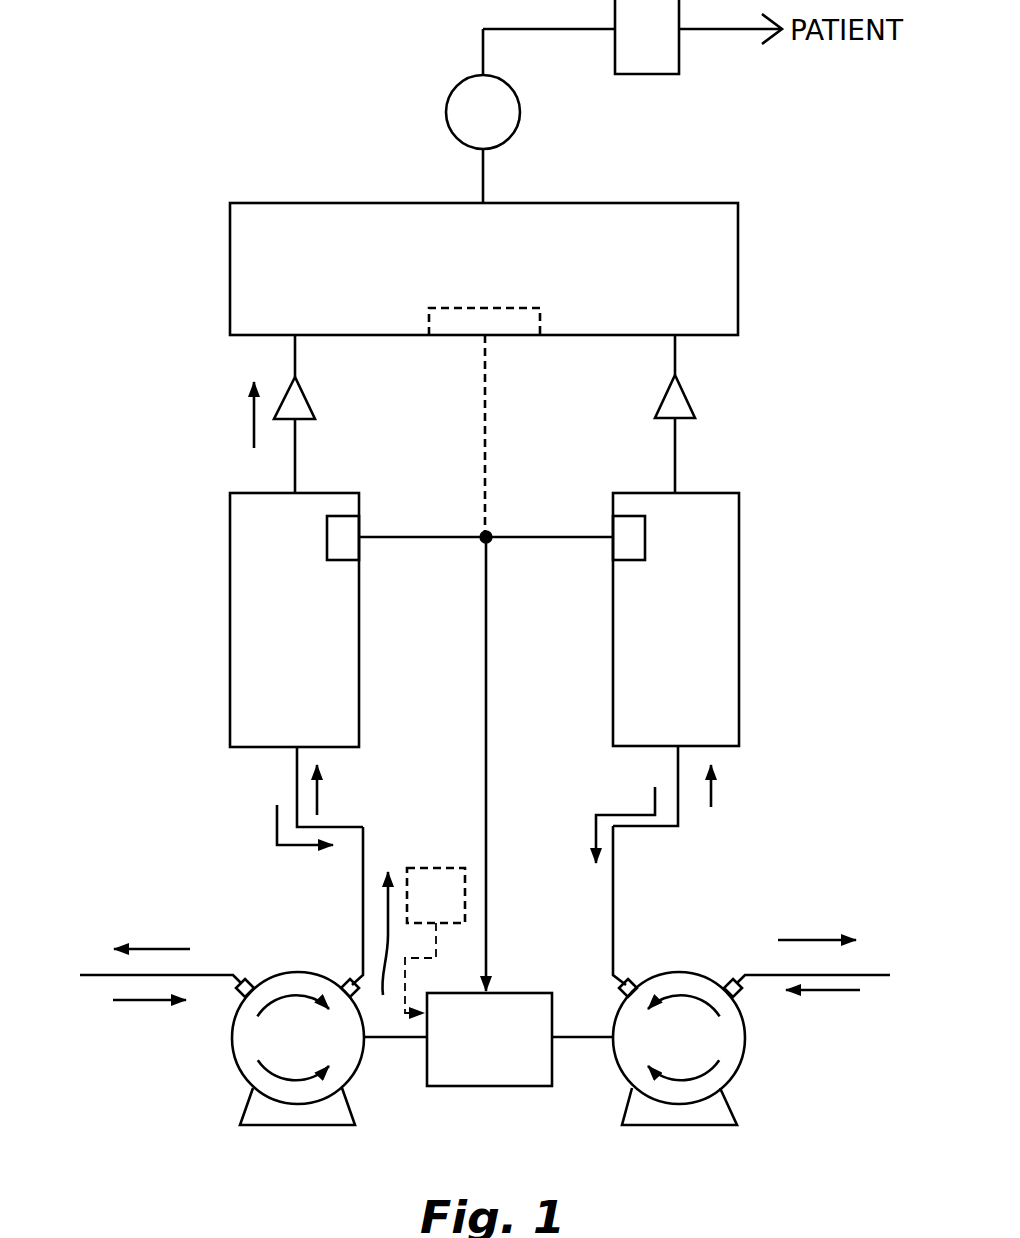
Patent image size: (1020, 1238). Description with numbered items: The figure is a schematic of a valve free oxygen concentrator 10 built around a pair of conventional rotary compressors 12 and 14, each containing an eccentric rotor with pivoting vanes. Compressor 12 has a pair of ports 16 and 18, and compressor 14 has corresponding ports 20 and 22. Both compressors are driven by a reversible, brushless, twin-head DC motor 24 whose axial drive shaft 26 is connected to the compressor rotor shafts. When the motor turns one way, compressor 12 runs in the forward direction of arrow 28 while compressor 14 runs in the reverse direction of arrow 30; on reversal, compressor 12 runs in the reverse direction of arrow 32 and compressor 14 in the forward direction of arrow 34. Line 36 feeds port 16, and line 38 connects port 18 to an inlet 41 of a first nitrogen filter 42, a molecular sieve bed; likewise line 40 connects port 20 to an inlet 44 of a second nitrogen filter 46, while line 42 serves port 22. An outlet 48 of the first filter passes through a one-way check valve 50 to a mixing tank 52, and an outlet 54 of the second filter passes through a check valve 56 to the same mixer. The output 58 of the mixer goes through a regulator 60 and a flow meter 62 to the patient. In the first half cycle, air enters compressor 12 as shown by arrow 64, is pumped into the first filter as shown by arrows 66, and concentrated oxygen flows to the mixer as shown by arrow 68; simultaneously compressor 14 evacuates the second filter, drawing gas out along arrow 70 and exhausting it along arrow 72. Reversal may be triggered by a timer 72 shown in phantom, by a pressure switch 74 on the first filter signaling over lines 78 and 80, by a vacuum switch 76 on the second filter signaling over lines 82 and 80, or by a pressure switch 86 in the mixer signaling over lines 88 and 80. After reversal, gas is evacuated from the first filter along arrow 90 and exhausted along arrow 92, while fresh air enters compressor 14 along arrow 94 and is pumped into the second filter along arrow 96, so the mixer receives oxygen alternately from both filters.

The valve free oxygen concentrator 10 is at (160, 248).
The rotary compressor 12 is at (245, 1105).
The rotary compressor 14 is at (628, 1105).
The port 16 is at (248, 978).
The port 18 is at (347, 982).
The port 20 is at (635, 980).
The port 22 is at (730, 980).
The DC motor 24 is at (483, 1088).
The drive shaft 26 is at (402, 1040).
The arrow 28 is at (297, 1003).
The arrow 30 is at (690, 998).
The arrow 32 is at (303, 1083).
The arrow 34 is at (700, 1070).
The line 36 is at (97, 975).
The line 38 is at (363, 853).
The line 40 is at (613, 890).
The inlet 41 is at (295, 748).
The first nitrogen filter 42 is at (359, 685).
The inlet 44 is at (678, 747).
The second nitrogen filter 46 is at (614, 695).
The outlet 48 is at (295, 492).
The check valve 50 is at (305, 398).
The mixing tank 52 is at (308, 203).
The outlet 54 is at (675, 492).
The check valve 56 is at (660, 402).
The output 58 is at (483, 198).
The regulator 60 is at (467, 126).
The flow meter 62 is at (632, 43).
The arrow 64 is at (148, 1000).
The arrows 66 is at (317, 792).
The arrow 68 is at (254, 415).
The arrow 70 is at (596, 815).
The timer 72 is at (457, 868).
The pressure sensing switch 74 is at (359, 525).
The pressure sensing switch 76 is at (620, 530).
The line 78 is at (457, 540).
The line 80 is at (488, 635).
The line 82 is at (513, 535).
The pressure sensitive switch 86 is at (540, 318).
The line 88 is at (483, 425).
The arrow 90 is at (277, 832).
The arrow 92 is at (142, 949).
The arrow 94 is at (818, 940).
The arrow 96 is at (711, 795).